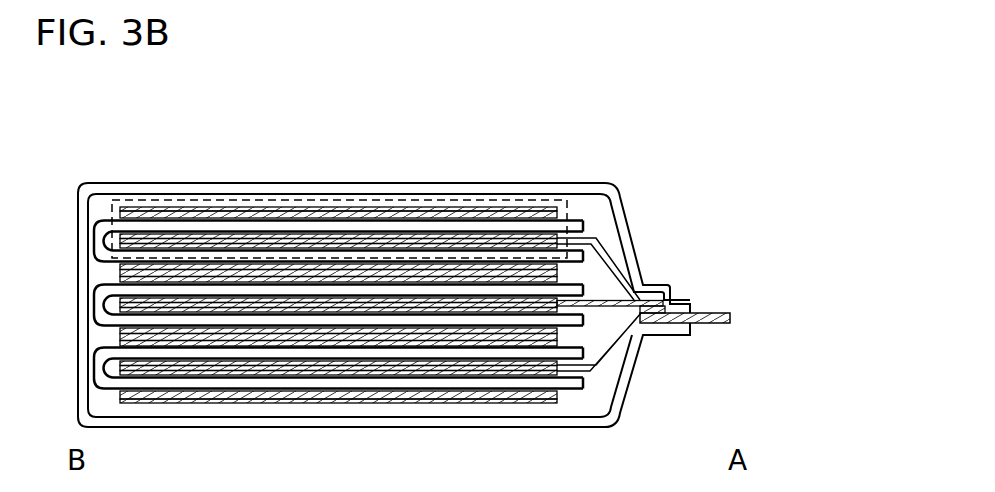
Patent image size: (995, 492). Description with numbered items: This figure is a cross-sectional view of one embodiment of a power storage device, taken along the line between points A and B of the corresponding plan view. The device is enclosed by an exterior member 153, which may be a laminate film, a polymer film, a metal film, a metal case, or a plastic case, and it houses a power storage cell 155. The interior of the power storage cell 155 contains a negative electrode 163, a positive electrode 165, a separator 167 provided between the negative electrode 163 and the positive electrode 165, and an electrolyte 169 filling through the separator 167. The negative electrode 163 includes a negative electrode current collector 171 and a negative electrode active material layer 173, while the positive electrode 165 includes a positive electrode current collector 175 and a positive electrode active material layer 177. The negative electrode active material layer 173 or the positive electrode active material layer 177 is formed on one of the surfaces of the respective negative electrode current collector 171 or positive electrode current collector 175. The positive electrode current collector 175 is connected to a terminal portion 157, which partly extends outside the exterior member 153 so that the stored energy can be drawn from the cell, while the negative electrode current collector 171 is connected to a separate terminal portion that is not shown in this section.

The exterior member 153 is at (632, 233).
The power storage cell 155 is at (140, 200).
The terminal portion 157 is at (730, 313).
The negative electrode 163 is at (277, 122).
The positive electrode 165 is at (532, 122).
The separator 167 is at (320, 225).
The electrolyte 169 is at (598, 223).
The negative electrode current collector 171 is at (212, 212).
The negative electrode active material layer 173 is at (265, 217).
The positive electrode current collector 175 is at (462, 250).
The positive electrode active material layer 177 is at (408, 237).